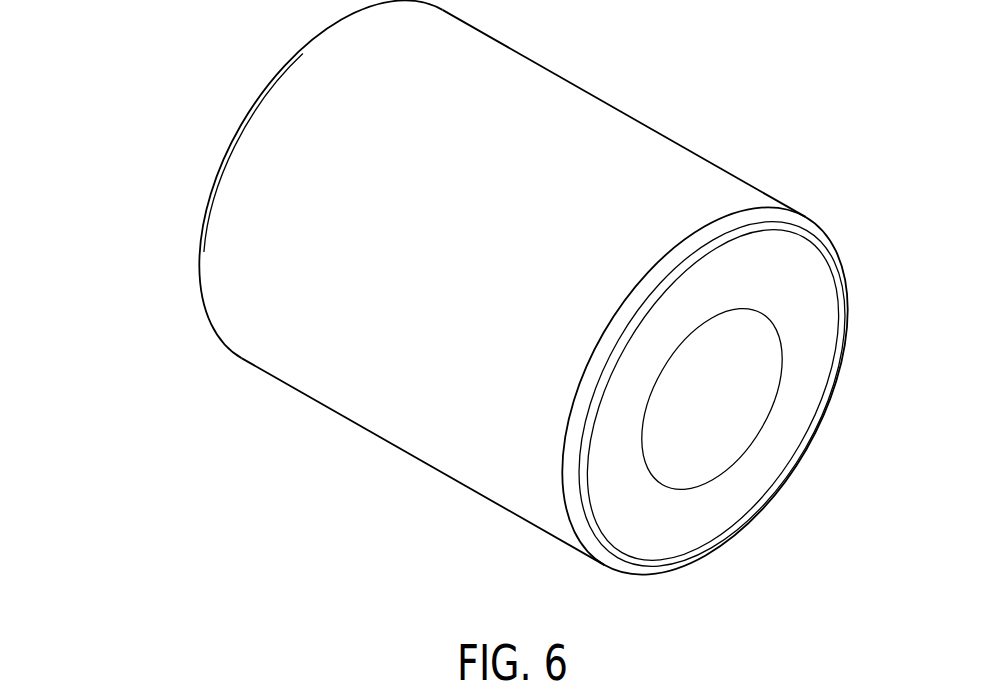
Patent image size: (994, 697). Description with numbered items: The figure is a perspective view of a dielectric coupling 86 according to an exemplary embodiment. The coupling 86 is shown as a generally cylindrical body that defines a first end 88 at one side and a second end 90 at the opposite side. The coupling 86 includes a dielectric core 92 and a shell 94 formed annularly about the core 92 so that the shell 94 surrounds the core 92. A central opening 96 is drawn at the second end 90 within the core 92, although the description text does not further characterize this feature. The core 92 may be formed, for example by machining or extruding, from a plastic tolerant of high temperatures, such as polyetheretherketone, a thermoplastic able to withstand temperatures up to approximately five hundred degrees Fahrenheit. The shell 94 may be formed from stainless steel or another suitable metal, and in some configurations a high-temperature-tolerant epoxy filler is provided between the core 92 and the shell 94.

The dielectric coupling 86 is at (143, 50).
The first end 88 is at (298, 50).
The second end 90 is at (812, 307).
The dielectric core 92 is at (748, 502).
The shell 94 is at (585, 107).
The central aperture 96 is at (728, 405).